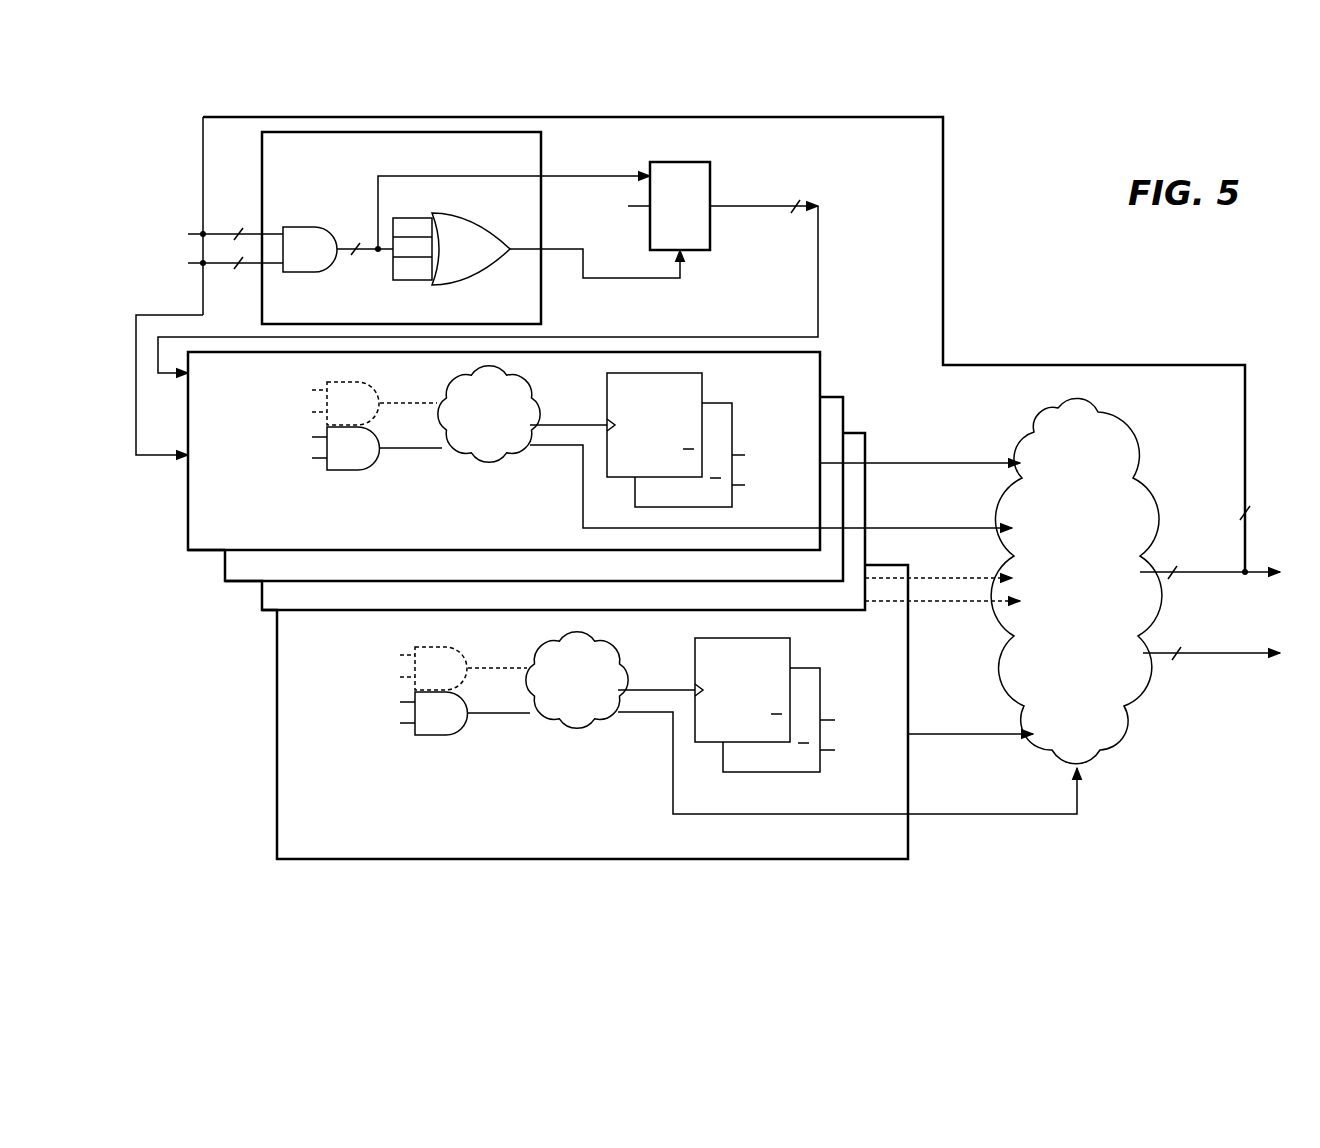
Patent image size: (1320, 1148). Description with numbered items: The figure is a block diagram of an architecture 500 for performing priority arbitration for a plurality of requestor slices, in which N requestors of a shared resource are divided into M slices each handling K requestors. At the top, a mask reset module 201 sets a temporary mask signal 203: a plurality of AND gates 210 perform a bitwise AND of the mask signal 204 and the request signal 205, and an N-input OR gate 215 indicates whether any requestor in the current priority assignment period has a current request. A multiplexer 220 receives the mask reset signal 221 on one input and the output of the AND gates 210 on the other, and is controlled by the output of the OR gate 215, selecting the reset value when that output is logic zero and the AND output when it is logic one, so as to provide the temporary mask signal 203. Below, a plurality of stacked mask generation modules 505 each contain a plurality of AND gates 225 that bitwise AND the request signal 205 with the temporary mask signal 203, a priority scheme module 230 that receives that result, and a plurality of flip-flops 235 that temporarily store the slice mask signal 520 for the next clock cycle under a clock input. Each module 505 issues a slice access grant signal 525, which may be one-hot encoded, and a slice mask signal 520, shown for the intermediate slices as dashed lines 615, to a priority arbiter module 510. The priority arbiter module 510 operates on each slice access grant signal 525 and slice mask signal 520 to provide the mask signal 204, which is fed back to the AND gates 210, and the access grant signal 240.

The mask reset module 201 is at (541, 140).
The temporary mask signal 203 is at (818, 276).
The mask signal 204 is at (203, 180).
The request signal 205 is at (203, 302).
The plurality of AND gates 210 is at (290, 227).
The OR gate 215 is at (470, 215).
The multiplexer 220 is at (700, 252).
The mask reset signal 221 is at (637, 212).
The plurality of AND gates 225 is at (345, 472).
The priority scheme module 230 is at (471, 464).
The plurality of flip-flops 235 is at (606, 382).
The access grant signal 240 is at (1240, 657).
The architecture 500 is at (1145, 792).
The mask generation modules 505 is at (822, 356).
The priority arbiter module 510 is at (1106, 410).
The slice mask signal 520 is at (953, 466).
The slice access grant signal 525 is at (926, 531).
The dashed grant line 615 is at (945, 604).